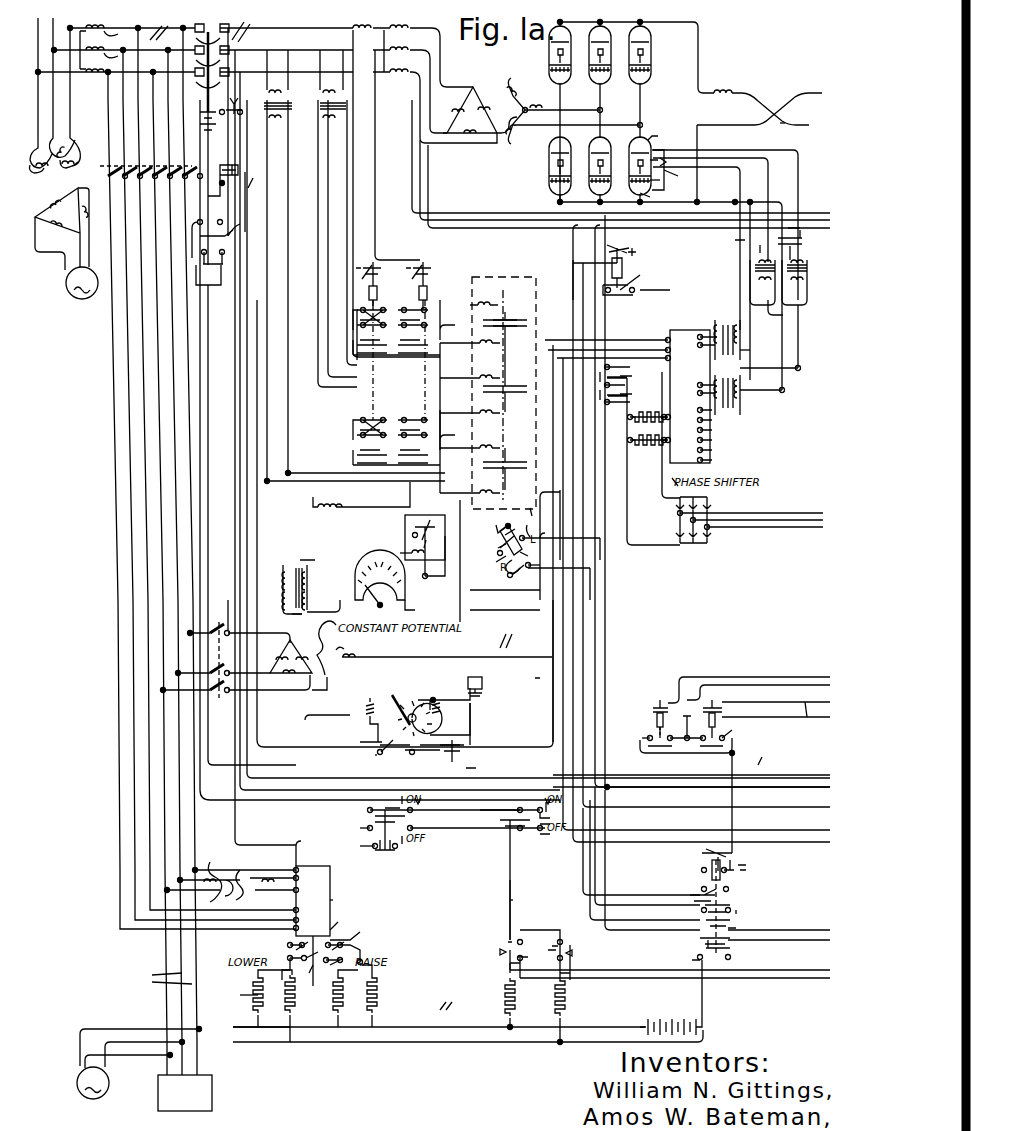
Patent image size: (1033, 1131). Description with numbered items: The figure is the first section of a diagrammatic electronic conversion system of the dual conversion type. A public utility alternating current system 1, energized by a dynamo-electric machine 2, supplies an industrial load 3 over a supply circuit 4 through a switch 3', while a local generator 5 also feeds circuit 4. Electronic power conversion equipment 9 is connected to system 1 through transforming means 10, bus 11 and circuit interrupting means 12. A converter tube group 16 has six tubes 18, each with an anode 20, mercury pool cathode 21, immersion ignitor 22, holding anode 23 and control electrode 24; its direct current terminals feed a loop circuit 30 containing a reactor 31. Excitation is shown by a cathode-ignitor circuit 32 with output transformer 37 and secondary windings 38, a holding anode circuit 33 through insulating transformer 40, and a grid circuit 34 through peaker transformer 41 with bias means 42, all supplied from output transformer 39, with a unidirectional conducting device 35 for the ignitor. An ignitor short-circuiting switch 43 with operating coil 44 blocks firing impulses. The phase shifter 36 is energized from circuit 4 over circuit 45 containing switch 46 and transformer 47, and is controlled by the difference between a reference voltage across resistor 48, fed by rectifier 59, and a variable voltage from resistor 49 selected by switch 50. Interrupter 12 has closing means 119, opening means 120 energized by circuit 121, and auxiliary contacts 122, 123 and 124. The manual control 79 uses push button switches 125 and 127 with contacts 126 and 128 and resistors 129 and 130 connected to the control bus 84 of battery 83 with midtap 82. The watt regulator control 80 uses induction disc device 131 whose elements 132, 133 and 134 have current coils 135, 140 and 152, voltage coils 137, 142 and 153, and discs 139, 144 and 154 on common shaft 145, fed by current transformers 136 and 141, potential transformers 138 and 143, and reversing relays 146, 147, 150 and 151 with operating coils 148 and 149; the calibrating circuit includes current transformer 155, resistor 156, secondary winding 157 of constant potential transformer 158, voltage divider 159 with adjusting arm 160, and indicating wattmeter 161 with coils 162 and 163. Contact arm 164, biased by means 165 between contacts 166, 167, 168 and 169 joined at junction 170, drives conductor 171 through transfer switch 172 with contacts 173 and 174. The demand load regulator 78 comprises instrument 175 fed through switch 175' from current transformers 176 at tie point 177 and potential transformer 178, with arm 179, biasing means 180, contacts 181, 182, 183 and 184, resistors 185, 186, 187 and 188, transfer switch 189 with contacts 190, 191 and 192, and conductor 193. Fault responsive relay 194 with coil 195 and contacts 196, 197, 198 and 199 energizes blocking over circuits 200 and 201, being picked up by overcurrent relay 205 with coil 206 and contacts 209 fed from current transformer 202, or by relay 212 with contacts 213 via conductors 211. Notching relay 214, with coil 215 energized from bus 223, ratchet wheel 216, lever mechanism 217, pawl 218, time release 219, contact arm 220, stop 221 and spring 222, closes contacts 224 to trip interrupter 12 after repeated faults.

The alternating current system 1 is at (64, 116).
The dynamo-electric machine 2 is at (77, 297).
The industrial load 3 is at (193, 1093).
The switch 3' is at (178, 551).
The supply circuit 4 is at (166, 976).
The generator 5 is at (104, 1098).
The electronic power conversion equipment 9 is at (776, 49).
The transforming means 10 is at (496, 83).
The bus 11 is at (238, 34).
The circuit interrupting means 12 is at (208, 28).
The converter tube group 16 is at (626, 106).
The tubes 18 is at (638, 144).
The anode 20 is at (656, 130).
The mercury pool cathode 21 is at (655, 195).
The immersion ignitor 22 is at (663, 181).
The holding anode 23 is at (663, 160).
The control electrode 24 is at (656, 150).
The direct current loop circuit 30 is at (792, 122).
The direct current reactor 31 is at (722, 90).
The cathode-ignitor circuit 32 is at (736, 243).
The holding anode circuit 33 is at (718, 236).
The grid circuit 34 is at (796, 239).
The unidirectional conducting device 35 is at (678, 179).
The excitation means 36 is at (674, 330).
The output transformer 37 is at (727, 331).
The secondary windings 38 is at (746, 346).
The output transformer 39 is at (730, 407).
The insulating transformer 40 is at (762, 282).
The peaker transformer 41 is at (796, 282).
The bias means 42 is at (794, 252).
The ignitor short-circuiting switch 43 is at (612, 248).
The operating coil 44 is at (626, 260).
The circuit 45 is at (510, 634).
The switch 46 is at (220, 623).
The transformer 47 is at (314, 645).
The resistor 48 is at (645, 446).
The resistor 49 is at (646, 415).
The switch 50 is at (622, 372).
The rectifier 59 is at (676, 530).
The demand load regulator 78 is at (389, 920).
The manual control 79 is at (499, 920).
The watt regulator control 80 is at (498, 609).
The midtap 82 is at (674, 1011).
The battery 83 is at (706, 1016).
The auxiliary control bus 84 is at (430, 1030).
The circuit closing means 119 is at (218, 122).
The circuit opening means 120 is at (234, 166).
The circuit 121 is at (280, 753).
The auxiliary circuit controlling contacts 122 is at (200, 220).
The auxiliary circuit controlling contacts 123 is at (228, 238).
The auxiliary circuit controlling contacts 124 is at (211, 270).
The push button switch 125 is at (504, 946).
The contacts 126 is at (522, 958).
The push button switch 127 is at (576, 948).
The contacts 128 is at (558, 942).
The adjustable resistor 129 is at (506, 996).
The adjustable resistor 130 is at (564, 996).
The induction disc type device 131 is at (496, 284).
The watt responsive element 132 is at (504, 314).
The watt responsive element 133 is at (508, 384).
The calibrating element 134 is at (506, 460).
The current coil 135 is at (488, 291).
The current transformer 136 is at (396, 191).
The voltage coil 137 is at (476, 340).
The potential transformer 138 is at (348, 102).
The induction disc 139 is at (508, 322).
The current coil 140 is at (472, 365).
The current transformer 141 is at (298, 80).
The voltage coil 142 is at (472, 409).
The potential transformer 143 is at (290, 108).
The induction disc 144 is at (506, 400).
The common shaft 145 is at (506, 520).
The auxiliary reversing relay 146 is at (368, 266).
The auxiliary reversing relay 147 is at (423, 266).
The operating coil 148 is at (364, 298).
The operating coil 149 is at (413, 298).
The auxiliary reversing relay 150 is at (373, 400).
The auxiliary reversing relay 151 is at (425, 400).
The current winding 152 is at (472, 436).
The voltage winding 153 is at (478, 490).
The induction disc 154 is at (508, 473).
The current transformer 155 is at (342, 498).
The resistor 156 is at (322, 592).
The secondary winding 157 is at (300, 566).
The constant potential transformer 158 is at (298, 614).
The adjustable resistor 159 is at (390, 602).
The adjusting arm 160 is at (378, 587).
The indicating wattmeter 161 is at (426, 515).
The current coil 162 is at (404, 557).
The voltage coil 163 is at (436, 564).
The movable contact arm 164 is at (508, 535).
The biasing means 165 is at (504, 548).
The contact 166 is at (502, 562).
The contact 167 is at (512, 576).
The contact 168 is at (526, 526).
The contact 169 is at (534, 511).
The common junction 170 is at (532, 580).
The conductor 171 is at (277, 814).
The watt regulator transfer switch 172 is at (508, 801).
The contacts 173 is at (498, 808).
The contacts 174 is at (506, 828).
The regulating instrument 175 is at (309, 888).
The switch 175' is at (188, 478).
The current transformers 176 is at (112, 38).
The tie point 177 is at (150, 40).
The potential transformer 178 is at (231, 882).
The movable contact arm 179 is at (313, 985).
The biasing means 180 is at (346, 927).
The fast raise contact 181 is at (361, 940).
The slow raise contact 182 is at (332, 978).
The slow lower contact 183 is at (258, 998).
The fast lower contact 184 is at (290, 954).
The adjustable resistor 185 is at (350, 1012).
The adjustable resistor 186 is at (376, 1004).
The adjustable resistor 187 is at (286, 1012).
The adjustable resistor 188 is at (250, 997).
The demand load regulator transfer switch 189 is at (374, 803).
The contacts 190 is at (402, 811).
The contacts 191 is at (360, 828).
The contact 192 is at (368, 848).
The conductor 193 is at (792, 775).
The fault responsive relay 194 is at (711, 901).
The operating coil 195 is at (729, 866).
The contacts 196 is at (725, 886).
The contacts 197 is at (704, 897).
The contacts 198 is at (726, 912).
The contacts 199 is at (708, 952).
The control circuit 200 is at (628, 895).
The control circuit 201 is at (788, 931).
The current transformer 202 is at (410, 28).
The overcurrent relay 205 is at (735, 764).
The operating coil 206 is at (654, 712).
The contacts 209 is at (650, 737).
The conductors 211 is at (802, 717).
The relay 212 is at (766, 708).
The contacts 213 is at (737, 730).
The notching relay 214 is at (422, 711).
The operating coil 215 is at (460, 747).
The ratchet wheel 216 is at (428, 719).
The reciprocating lever mechanism 217 is at (472, 722).
The pawl 218 is at (444, 696).
The delayed time release 219 is at (482, 682).
The contact arm 220 is at (372, 712).
The stop 221 is at (403, 692).
The spring 222 is at (409, 750).
The control bus 223 is at (634, 917).
The contacts 224 is at (376, 754).